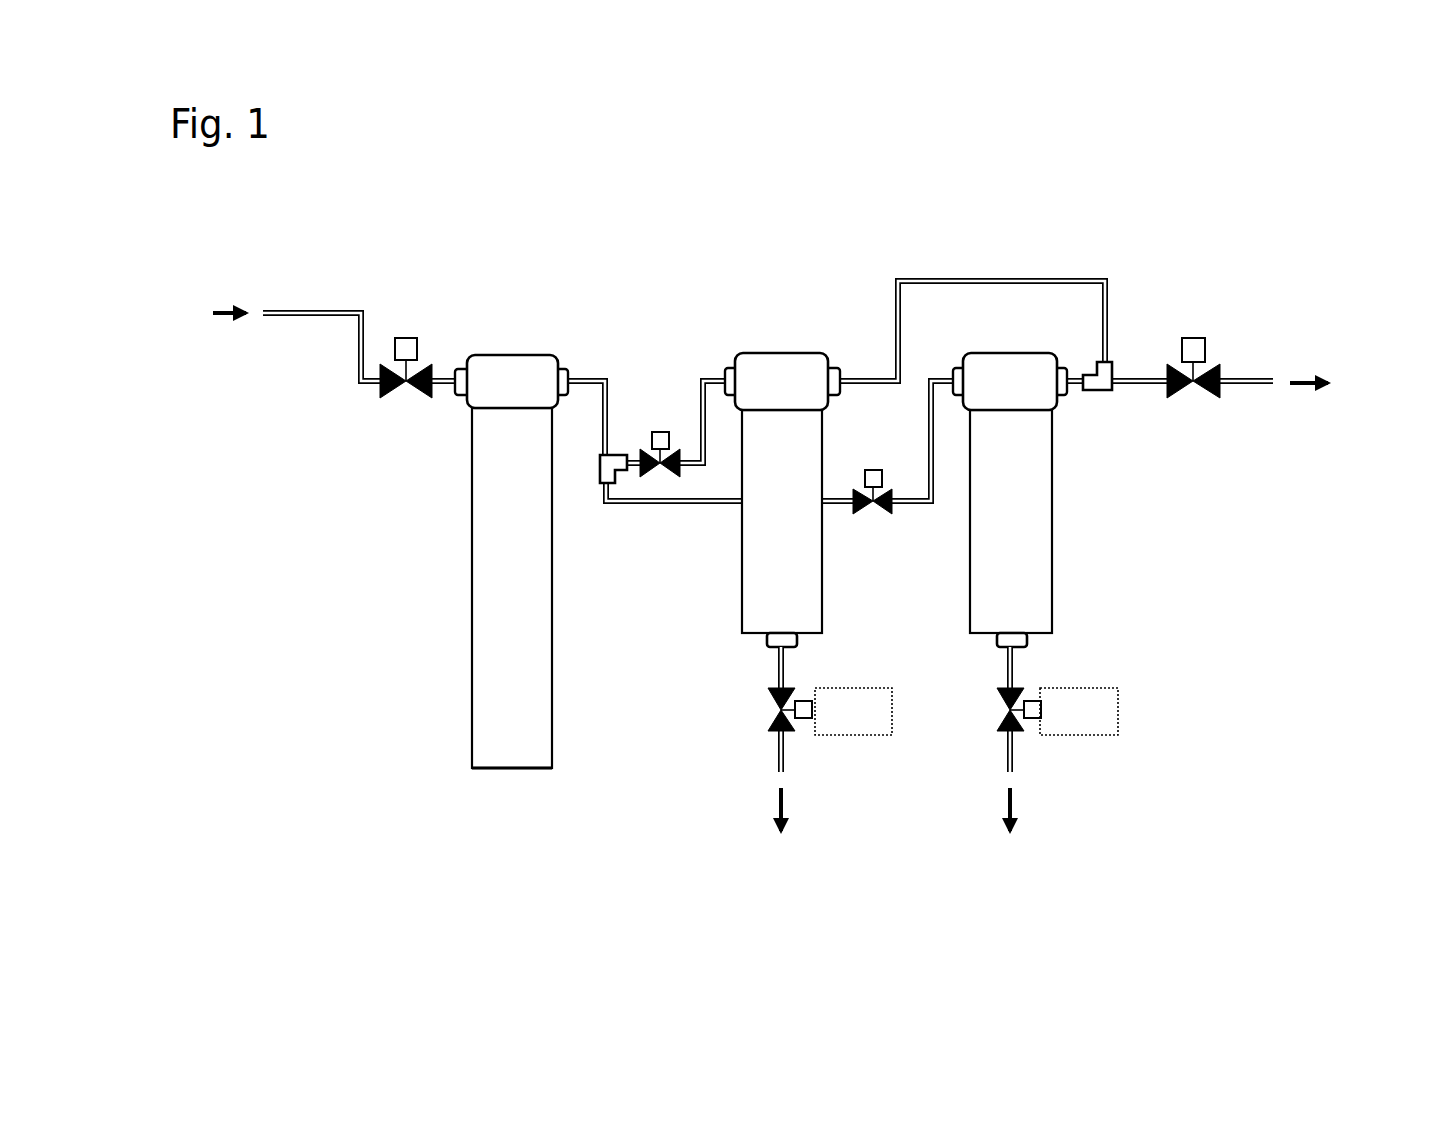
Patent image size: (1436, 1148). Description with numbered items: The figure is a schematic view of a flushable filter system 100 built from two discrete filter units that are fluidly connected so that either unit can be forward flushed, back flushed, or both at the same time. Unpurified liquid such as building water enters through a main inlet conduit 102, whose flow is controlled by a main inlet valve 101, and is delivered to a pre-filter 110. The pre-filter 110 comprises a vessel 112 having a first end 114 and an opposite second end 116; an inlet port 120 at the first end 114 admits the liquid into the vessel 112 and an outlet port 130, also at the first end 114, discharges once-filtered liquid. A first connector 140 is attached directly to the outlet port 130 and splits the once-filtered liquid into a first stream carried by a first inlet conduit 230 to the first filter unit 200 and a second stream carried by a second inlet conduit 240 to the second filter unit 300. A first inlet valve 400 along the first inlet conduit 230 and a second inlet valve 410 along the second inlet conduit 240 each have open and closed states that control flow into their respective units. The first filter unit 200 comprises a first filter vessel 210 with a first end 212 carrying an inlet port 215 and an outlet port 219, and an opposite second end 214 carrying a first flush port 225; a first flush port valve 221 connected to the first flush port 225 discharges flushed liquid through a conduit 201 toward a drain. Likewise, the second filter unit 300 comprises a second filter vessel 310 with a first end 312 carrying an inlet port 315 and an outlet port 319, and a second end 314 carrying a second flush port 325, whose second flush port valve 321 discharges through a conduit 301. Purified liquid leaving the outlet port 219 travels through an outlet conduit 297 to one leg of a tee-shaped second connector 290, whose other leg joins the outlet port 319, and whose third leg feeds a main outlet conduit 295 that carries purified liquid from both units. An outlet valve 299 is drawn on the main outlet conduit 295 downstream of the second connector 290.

The flushable filter system 100 is at (1328, 238).
The main inlet valve 101 is at (408, 390).
The main inlet conduit 102 is at (293, 317).
The pre-filter 110 is at (469, 538).
The vessel 112 is at (478, 552).
The first end 114 is at (512, 353).
The second end 116 is at (512, 768).
The inlet port 120 is at (458, 367).
The outlet port 130 is at (563, 367).
The first connector 140 is at (603, 486).
The first filter unit 200 is at (763, 578).
The conduit 201 is at (775, 762).
The first filter vessel 210 is at (812, 533).
The first end 212 is at (797, 353).
The second end 214 is at (753, 635).
The inlet port 215 is at (729, 367).
The outlet port 219 is at (833, 367).
The first flush port valve 221 is at (777, 718).
The first flush port 225 is at (797, 641).
The first inlet conduit 230 is at (593, 378).
The second inlet conduit 240 is at (702, 505).
The second connector 290 is at (1097, 392).
The main outlet conduit 295 is at (1142, 380).
The outlet conduit 297 is at (992, 277).
The outlet valve 299 is at (1196, 338).
The second filter unit 300 is at (1041, 598).
The conduit 301 is at (1005, 762).
The second filter vessel 310 is at (1040, 458).
The first end 312 is at (1008, 353).
The second end 314 is at (1042, 635).
The inlet port 315 is at (953, 368).
The outlet port 319 is at (1065, 368).
The second flush port valve 321 is at (1008, 718).
The second flush port 325 is at (997, 637).
The first inlet valve 400 is at (658, 432).
The second inlet valve 410 is at (875, 508).